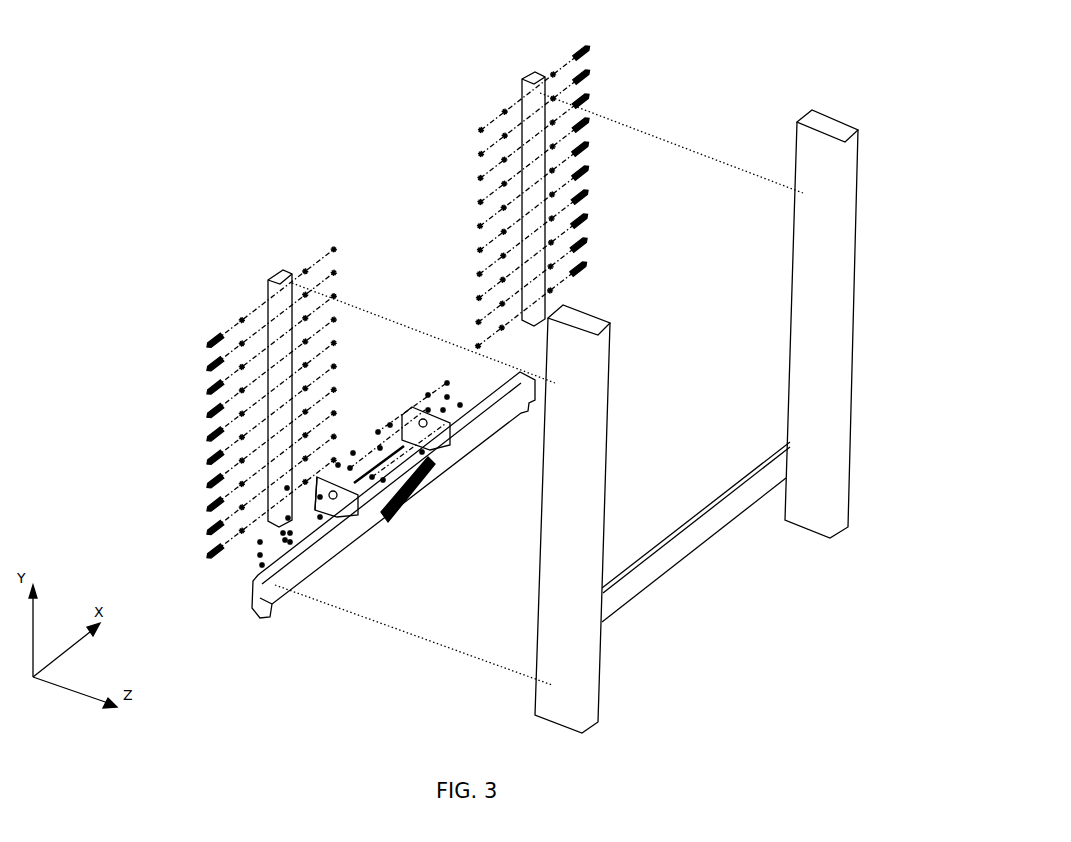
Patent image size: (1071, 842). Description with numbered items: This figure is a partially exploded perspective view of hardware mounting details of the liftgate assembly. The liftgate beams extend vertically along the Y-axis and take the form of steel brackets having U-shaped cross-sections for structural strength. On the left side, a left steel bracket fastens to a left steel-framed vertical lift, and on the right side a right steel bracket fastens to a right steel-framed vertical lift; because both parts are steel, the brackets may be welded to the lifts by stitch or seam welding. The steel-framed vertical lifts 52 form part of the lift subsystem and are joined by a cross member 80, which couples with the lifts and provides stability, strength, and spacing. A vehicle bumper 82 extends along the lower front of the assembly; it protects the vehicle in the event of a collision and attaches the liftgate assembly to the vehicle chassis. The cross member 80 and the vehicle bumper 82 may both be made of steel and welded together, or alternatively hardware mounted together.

The steel-framed vertical lifts 52 is at (900, 106).
The cross member 80 is at (701, 530).
The vehicle bumper 82 is at (352, 531).